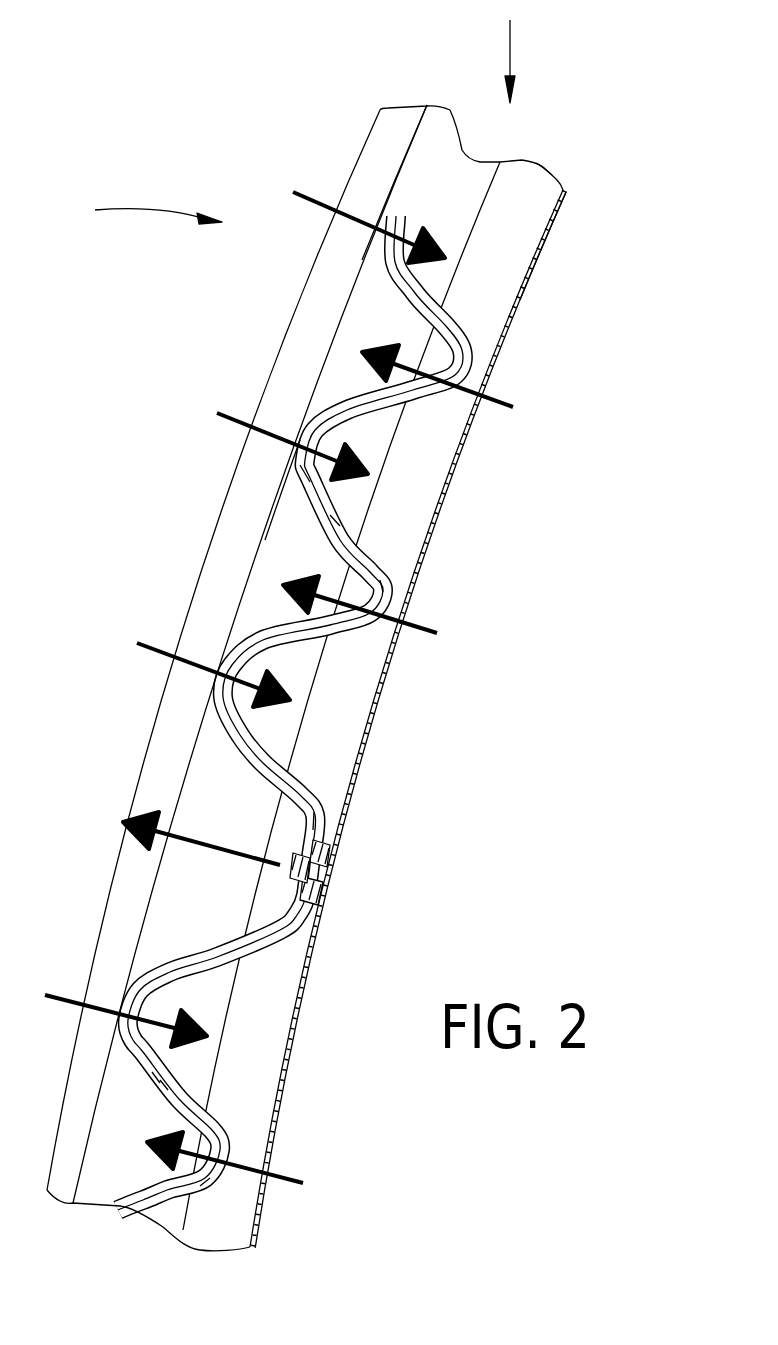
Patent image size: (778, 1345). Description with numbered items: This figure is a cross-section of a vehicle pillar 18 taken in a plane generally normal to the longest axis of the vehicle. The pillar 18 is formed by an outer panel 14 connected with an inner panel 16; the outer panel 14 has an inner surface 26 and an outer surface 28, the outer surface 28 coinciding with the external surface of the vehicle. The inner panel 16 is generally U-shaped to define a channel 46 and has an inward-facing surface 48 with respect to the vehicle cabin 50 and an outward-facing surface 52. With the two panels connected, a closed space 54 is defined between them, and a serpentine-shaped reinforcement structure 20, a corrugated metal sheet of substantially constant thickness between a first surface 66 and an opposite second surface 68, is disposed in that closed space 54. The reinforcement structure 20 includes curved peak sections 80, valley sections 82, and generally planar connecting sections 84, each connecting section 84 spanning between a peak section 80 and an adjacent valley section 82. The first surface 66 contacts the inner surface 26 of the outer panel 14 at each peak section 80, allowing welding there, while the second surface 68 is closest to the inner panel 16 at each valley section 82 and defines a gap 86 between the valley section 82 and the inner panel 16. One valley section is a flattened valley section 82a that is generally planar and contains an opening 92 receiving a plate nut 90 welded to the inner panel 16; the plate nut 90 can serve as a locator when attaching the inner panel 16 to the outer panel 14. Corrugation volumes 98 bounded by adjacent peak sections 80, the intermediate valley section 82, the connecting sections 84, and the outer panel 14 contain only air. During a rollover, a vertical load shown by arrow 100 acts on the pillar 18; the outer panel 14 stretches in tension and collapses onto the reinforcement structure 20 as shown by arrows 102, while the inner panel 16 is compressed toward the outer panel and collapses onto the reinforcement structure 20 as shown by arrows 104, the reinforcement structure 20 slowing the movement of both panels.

The outer panel 14 is at (370, 140).
The inner panel 16 is at (548, 249).
The vehicle pillar 18 is at (142, 214).
The serpentine-shaped reinforcement structure 20 is at (400, 527).
The inner surface 26 is at (420, 134).
The outer surface 28 is at (308, 275).
The channel 46 is at (527, 221).
The inward-facing surface 48 is at (512, 316).
The vehicle cabin 50 is at (686, 510).
The outward-facing surface 52 is at (557, 204).
The closed space 54 is at (314, 556).
The first surface 66 is at (160, 1083).
The second surface 68 is at (177, 1077).
The peak sections 80 is at (300, 467).
The valley sections 82 is at (392, 577).
The flattened valley section 82a is at (324, 810).
The connecting sections 84 is at (330, 515).
The gap 86 is at (243, 1157).
The plate nut 90 is at (323, 890).
The opening 92 is at (290, 887).
The corrugation volumes 98 is at (392, 323).
The arrow 100 is at (513, 40).
The arrows 102 is at (313, 194).
The arrows 104 is at (497, 405).